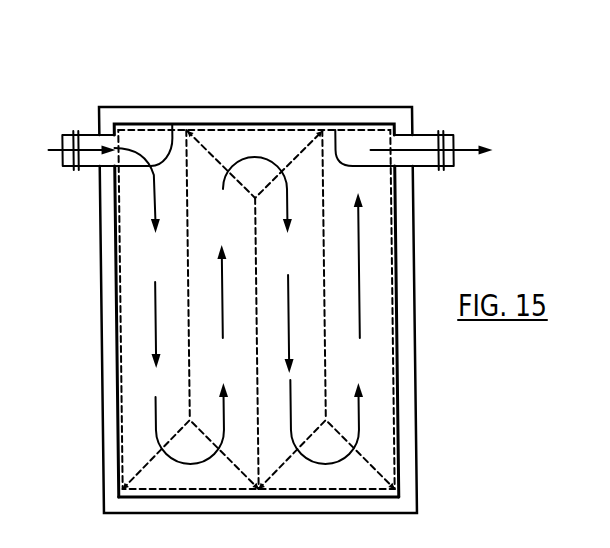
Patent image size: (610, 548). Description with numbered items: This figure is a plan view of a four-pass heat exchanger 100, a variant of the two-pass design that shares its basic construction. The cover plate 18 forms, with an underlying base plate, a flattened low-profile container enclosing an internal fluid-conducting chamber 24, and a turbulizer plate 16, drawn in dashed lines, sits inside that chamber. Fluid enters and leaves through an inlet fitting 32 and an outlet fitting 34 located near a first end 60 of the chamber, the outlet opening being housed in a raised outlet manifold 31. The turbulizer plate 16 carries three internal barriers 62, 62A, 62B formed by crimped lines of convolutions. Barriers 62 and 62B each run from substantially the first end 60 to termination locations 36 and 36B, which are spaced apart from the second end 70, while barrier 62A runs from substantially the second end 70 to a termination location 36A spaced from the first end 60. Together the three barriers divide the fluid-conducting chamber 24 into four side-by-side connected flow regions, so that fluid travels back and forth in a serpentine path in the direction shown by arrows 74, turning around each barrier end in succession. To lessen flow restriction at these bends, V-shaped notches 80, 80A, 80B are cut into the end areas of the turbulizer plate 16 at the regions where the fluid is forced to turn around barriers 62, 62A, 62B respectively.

The four-pass heat exchanger 100 is at (430, 97).
The turbulizer plate 16 is at (394, 347).
The cover plate 18 is at (395, 400).
The fluid-conducting chamber 24 is at (144, 134).
The outlet manifold 31 is at (358, 135).
The inlet fitting 32 is at (90, 134).
The outlet fitting 34 is at (427, 133).
The termination location 36 is at (186, 420).
The termination location 36A is at (254, 198).
The termination location 36B is at (322, 420).
The first end 60 is at (212, 124).
The internal barrier 62 is at (186, 272).
The internal barrier 62A is at (253, 312).
The internal barrier 62B is at (322, 298).
The second end 70 is at (284, 498).
The arrows 74 is at (287, 330).
The V-shaped notch 80 is at (163, 477).
The V-shaped notch 80A is at (266, 138).
The V-shaped notch 80B is at (342, 478).